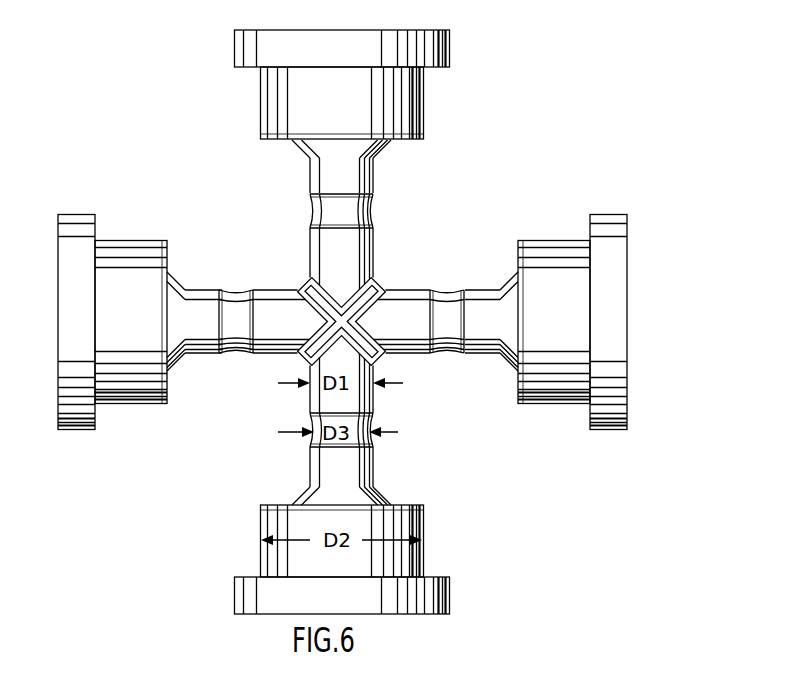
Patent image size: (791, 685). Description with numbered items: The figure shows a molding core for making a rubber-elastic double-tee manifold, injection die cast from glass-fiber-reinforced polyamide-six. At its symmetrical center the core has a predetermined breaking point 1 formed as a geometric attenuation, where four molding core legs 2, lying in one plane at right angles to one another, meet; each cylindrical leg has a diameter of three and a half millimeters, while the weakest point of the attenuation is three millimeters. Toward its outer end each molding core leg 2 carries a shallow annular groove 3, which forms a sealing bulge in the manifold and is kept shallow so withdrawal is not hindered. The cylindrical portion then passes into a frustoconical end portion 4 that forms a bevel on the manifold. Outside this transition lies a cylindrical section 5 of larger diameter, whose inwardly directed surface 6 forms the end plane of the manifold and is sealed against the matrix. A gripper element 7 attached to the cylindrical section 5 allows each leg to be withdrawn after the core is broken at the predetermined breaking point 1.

The predetermined breaking point 1 is at (372, 305).
The molding core leg 2 is at (403, 335).
The annular groove 3 is at (450, 290).
The frustoconical end portion 4 is at (172, 292).
The cylindrical section 5 is at (128, 258).
The inwardly directed surface 6 is at (280, 138).
The gripper element 7 is at (438, 592).